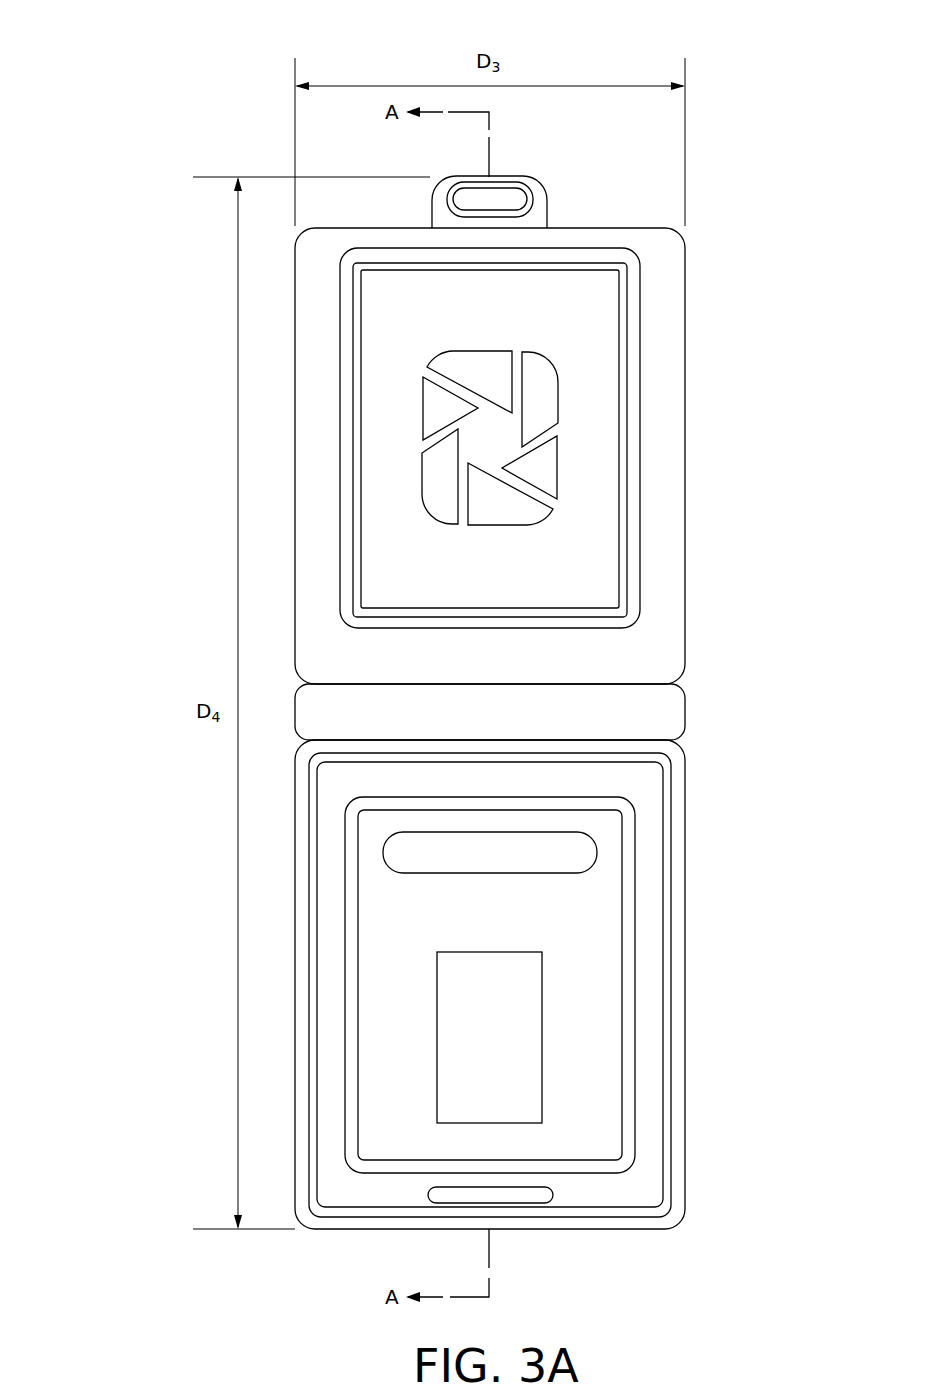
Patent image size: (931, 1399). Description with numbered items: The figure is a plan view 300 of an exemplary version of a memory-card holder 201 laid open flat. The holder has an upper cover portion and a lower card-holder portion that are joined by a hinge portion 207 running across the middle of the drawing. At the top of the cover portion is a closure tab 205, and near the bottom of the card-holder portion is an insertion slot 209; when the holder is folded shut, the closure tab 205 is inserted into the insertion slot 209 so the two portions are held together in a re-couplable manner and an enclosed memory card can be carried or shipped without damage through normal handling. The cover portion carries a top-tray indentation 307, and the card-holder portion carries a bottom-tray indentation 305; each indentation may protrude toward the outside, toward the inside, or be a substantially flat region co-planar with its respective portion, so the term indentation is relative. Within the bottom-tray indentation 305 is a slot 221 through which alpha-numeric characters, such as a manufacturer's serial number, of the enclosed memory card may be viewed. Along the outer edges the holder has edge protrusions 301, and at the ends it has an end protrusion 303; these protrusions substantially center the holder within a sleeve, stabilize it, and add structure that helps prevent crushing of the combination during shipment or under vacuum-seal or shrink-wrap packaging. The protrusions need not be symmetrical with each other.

The plan view 300 is at (152, 50).
The memory-card holder 201 is at (685, 350).
The closure tab 205 is at (502, 176).
The hinge portion 207 is at (685, 712).
The insertion slot 209 is at (532, 1195).
The slot 221 is at (428, 873).
The edge protrusions 301 is at (357, 225).
The end protrusion 303 is at (687, 228).
The bottom-tray indentation 305 is at (564, 985).
The top-tray indentation 307 is at (592, 549).